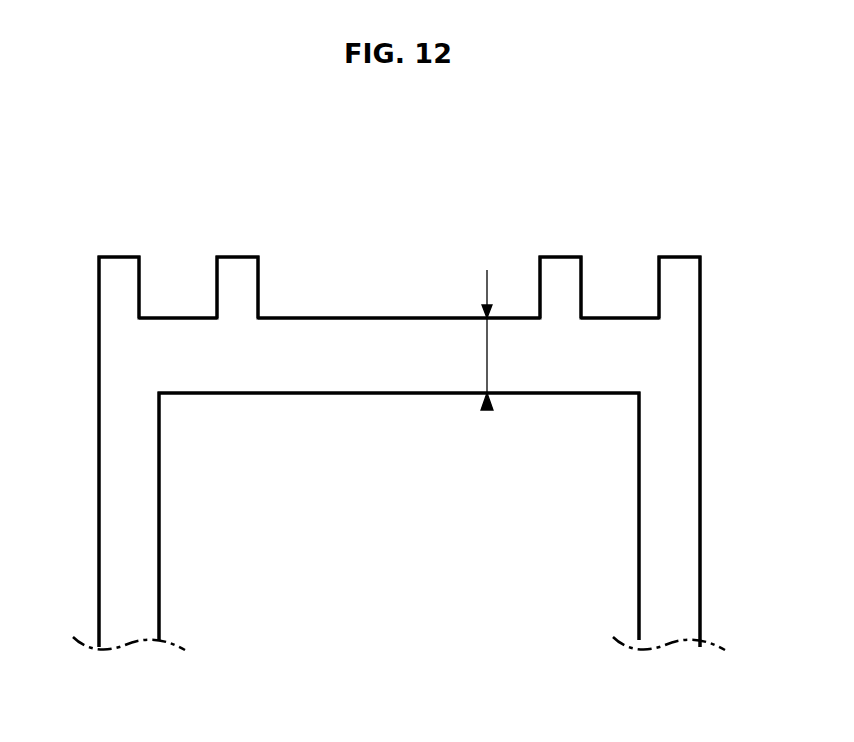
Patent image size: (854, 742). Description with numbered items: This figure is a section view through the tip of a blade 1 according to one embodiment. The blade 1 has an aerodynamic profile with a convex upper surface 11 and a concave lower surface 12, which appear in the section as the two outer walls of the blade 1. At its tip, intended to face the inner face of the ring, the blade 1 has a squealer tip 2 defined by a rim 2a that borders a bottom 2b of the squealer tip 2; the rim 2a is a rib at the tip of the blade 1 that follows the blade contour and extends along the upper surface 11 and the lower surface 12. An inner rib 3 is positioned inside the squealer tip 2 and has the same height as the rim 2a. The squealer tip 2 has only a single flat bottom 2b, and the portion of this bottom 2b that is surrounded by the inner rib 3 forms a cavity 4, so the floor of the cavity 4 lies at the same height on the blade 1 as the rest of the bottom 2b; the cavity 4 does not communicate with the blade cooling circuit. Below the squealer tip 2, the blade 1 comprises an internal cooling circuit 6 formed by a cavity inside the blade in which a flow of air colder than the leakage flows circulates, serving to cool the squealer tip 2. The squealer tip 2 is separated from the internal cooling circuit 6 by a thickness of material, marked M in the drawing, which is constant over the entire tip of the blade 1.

The blade 1 is at (452, 191).
The squealer tip 2 is at (334, 318).
The rim 2a is at (118, 256).
The bottom 2b is at (181, 316).
The inner rib 3 is at (236, 256).
The cavity 4 is at (389, 291).
The internal cooling circuit 6 is at (390, 518).
The upper surface 11 is at (701, 358).
The lower surface 12 is at (98, 358).